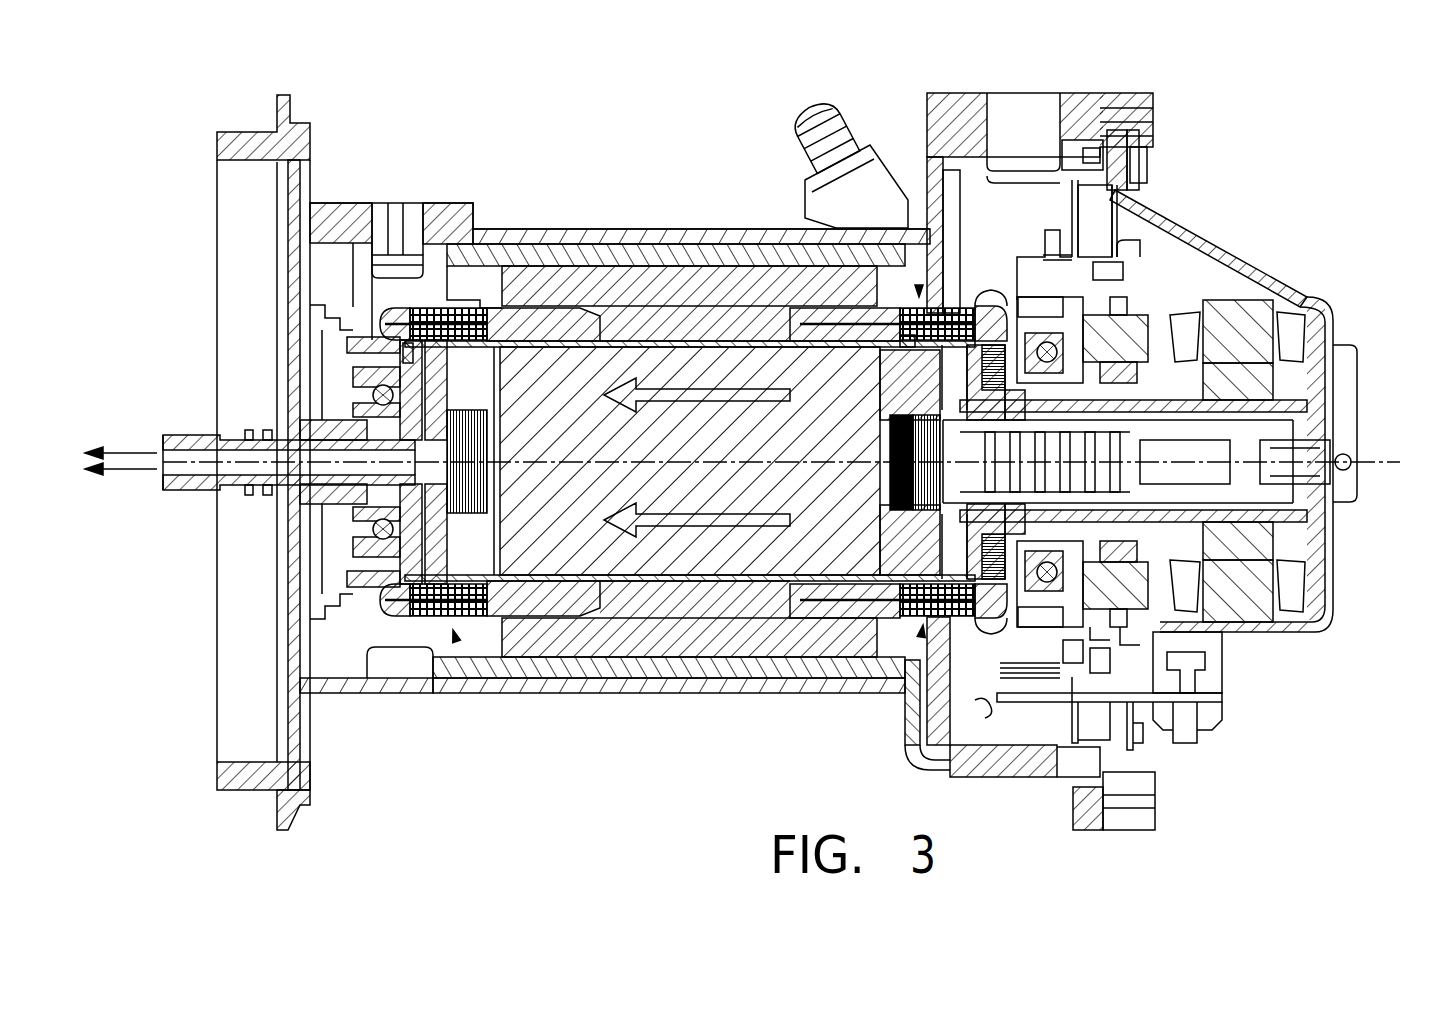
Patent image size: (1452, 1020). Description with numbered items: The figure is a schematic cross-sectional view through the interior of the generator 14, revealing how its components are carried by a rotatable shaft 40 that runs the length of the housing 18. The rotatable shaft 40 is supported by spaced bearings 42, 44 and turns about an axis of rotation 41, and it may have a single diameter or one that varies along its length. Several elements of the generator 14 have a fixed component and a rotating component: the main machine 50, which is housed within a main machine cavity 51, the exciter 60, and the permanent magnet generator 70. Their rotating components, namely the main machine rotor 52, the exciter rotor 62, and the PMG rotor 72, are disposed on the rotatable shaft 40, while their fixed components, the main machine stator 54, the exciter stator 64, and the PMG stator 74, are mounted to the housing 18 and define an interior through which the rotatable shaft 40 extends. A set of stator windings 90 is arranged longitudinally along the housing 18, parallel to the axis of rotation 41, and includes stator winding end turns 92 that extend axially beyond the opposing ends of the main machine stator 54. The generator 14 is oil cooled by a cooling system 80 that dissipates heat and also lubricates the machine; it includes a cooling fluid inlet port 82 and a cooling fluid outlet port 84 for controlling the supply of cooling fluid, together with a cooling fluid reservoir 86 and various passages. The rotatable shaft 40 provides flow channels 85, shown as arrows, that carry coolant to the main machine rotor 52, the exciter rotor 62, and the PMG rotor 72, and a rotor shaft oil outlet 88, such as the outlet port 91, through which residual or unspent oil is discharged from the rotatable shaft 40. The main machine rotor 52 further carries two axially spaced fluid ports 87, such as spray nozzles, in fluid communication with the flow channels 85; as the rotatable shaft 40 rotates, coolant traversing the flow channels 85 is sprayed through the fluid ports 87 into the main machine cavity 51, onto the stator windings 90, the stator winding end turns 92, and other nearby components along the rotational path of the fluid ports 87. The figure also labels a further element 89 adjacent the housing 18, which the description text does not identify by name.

The generator 14 is at (505, 110).
The housing 18 is at (528, 230).
The rotatable shaft 40 is at (255, 500).
The axis of rotation 41 is at (1362, 475).
The bearing 42 is at (372, 538).
The bearing 44 is at (1045, 583).
The main machine 50 is at (615, 178).
The main machine cavity 51 is at (483, 229).
The main machine rotor 52 is at (538, 557).
The main machine stator 54 is at (612, 643).
The exciter 60 is at (1245, 290).
The exciter rotor 62 is at (1283, 553).
The exciter stator 64 is at (1250, 610).
The permanent magnet generator 70 is at (1147, 307).
The PMG rotor 72 is at (1123, 587).
The PMG stator 74 is at (1135, 645).
The cooling system 80 is at (433, 268).
The cooling fluid inlet port 82 is at (399, 217).
The cooling fluid outlet port 84 is at (797, 122).
The flow channels 85 is at (655, 510).
The cooling fluid reservoir 86 is at (980, 705).
The fluid port 87 is at (420, 375).
The rotor shaft oil outlet 88 is at (135, 450).
The housing wall 89 is at (668, 229).
The stator windings 90 is at (800, 323).
The outlet port 91 is at (155, 438).
The stator winding end turns 92 is at (919, 290).